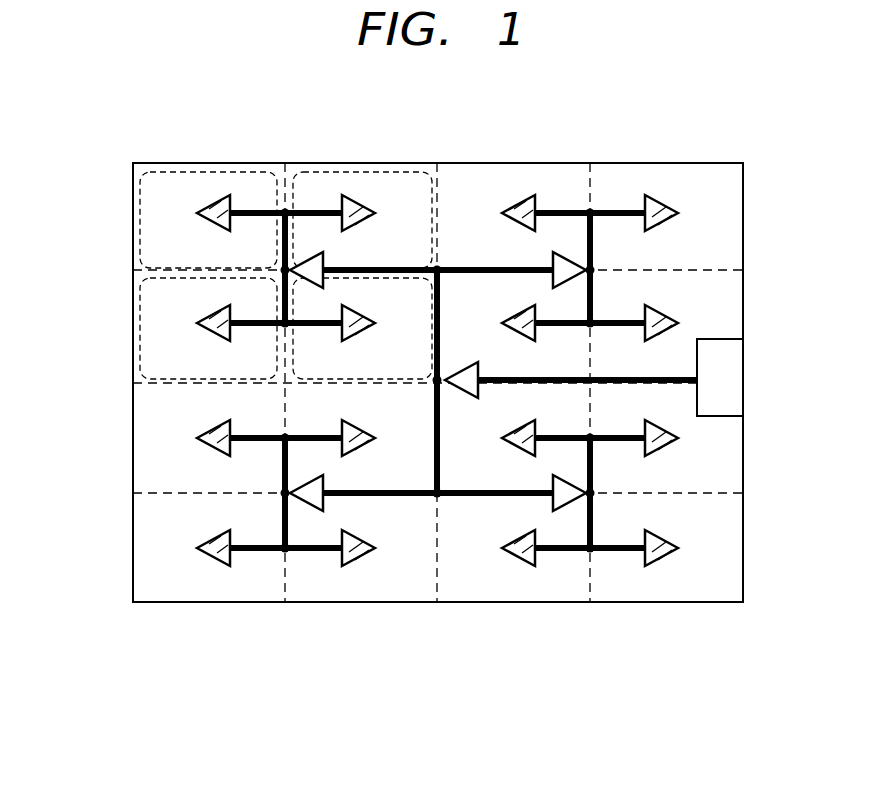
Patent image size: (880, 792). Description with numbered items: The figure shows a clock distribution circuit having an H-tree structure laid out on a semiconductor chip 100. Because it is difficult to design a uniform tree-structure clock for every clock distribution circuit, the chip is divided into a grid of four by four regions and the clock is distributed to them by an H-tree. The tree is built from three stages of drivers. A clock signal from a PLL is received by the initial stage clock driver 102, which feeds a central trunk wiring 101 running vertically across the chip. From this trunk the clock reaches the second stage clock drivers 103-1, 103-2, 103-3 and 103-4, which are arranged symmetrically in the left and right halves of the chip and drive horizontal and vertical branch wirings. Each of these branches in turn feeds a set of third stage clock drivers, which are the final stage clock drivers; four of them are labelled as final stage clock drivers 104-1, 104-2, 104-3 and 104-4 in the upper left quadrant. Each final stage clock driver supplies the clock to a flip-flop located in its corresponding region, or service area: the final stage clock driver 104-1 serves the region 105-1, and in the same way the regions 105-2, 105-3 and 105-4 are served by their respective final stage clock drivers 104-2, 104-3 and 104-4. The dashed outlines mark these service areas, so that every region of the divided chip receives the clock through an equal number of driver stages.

The semiconductor integrated circuit 100 is at (532, 162).
The clock trunk wiring 101 is at (436, 416).
The initial stage clock driver 102 is at (473, 371).
The second stage clock driver 103-1 is at (323, 261).
The second stage clock driver 103-2 is at (323, 486).
The second stage clock driver 103-3 is at (555, 260).
The second stage clock driver 103-4 is at (557, 482).
The final stage clock driver 104-1 is at (213, 232).
The final stage clock driver 104-2 is at (213, 322).
The final stage clock driver 104-3 is at (388, 197).
The final stage clock driver 104-4 is at (358, 340).
The region (service area) 105-1 is at (163, 160).
The region (service area) 105-2 is at (152, 328).
The region (service area) 105-3 is at (324, 160).
The region (service area) 105-4 is at (304, 357).